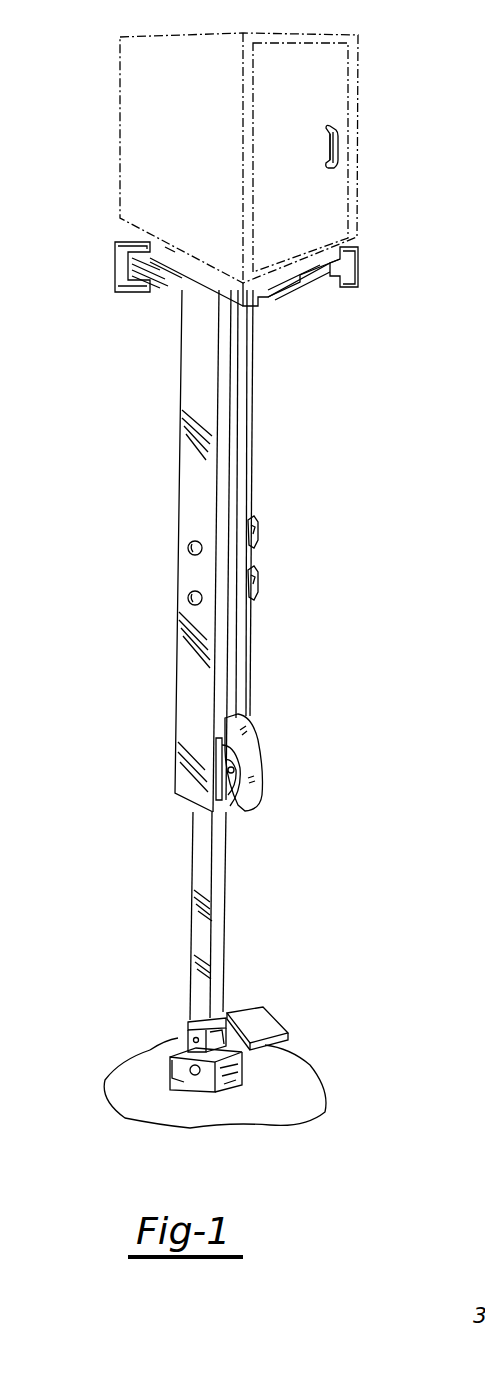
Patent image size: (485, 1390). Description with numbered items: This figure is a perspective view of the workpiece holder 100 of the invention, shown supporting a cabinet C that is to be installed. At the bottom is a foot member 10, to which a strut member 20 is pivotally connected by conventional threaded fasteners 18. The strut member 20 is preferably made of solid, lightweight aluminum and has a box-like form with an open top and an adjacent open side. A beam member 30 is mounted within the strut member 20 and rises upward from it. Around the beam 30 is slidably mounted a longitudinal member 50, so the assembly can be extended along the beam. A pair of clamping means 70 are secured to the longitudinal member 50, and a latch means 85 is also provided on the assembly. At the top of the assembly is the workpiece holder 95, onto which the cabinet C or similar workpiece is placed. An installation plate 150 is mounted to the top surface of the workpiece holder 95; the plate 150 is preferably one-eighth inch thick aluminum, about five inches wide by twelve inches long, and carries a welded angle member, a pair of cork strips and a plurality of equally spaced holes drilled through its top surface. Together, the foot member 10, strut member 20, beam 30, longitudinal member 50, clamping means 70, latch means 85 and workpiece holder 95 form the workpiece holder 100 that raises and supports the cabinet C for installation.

The cabinet C is at (357, 130).
The installation plate 150 is at (160, 294).
The workpiece holder 95 is at (300, 274).
The clamping means 70 is at (260, 540).
The longitudinal member 50 is at (250, 677).
The workpiece holder 100 is at (102, 734).
The latch means 85 is at (262, 786).
The beam member 30 is at (220, 918).
The strut member 20 is at (185, 1030).
The threaded fasteners 18 is at (178, 1079).
The foot member 10 is at (200, 1079).